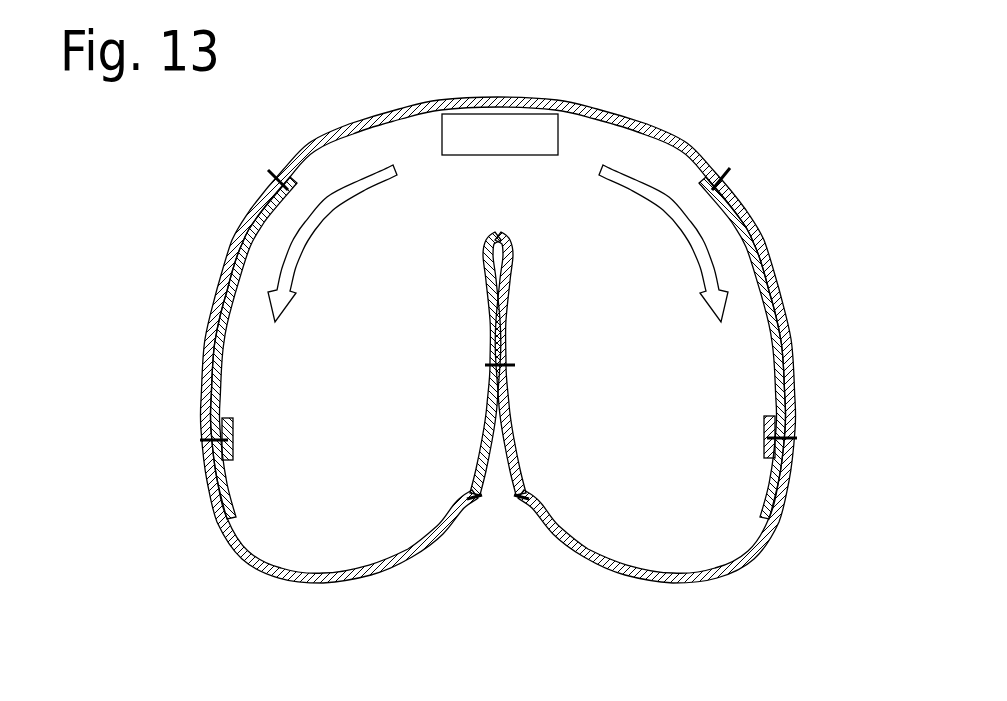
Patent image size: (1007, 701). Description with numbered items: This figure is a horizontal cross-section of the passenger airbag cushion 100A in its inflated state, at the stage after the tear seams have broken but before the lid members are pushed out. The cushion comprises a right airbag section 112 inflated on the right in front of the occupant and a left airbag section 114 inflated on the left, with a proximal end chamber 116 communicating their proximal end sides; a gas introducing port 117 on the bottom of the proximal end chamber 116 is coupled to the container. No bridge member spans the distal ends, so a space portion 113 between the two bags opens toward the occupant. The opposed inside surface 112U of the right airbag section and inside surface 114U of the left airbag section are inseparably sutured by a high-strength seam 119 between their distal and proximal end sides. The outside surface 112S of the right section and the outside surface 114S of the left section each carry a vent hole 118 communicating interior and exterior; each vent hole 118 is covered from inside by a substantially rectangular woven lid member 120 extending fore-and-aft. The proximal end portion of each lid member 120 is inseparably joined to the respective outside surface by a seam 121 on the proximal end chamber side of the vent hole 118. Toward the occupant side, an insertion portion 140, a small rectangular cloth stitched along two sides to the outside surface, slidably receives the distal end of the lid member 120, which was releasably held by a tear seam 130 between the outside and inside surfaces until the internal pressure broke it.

The passenger airbag cushion 100A is at (706, 100).
The right airbag section 112 is at (838, 482).
The outside surface of the right airbag section 112S is at (791, 370).
The inside surface of the right airbag section 112U is at (516, 452).
The space portion 113 is at (495, 456).
The left airbag section 114 is at (153, 503).
The outside surface of the left airbag section 114S is at (205, 370).
The inside surface of the left airbag section 114U is at (481, 452).
The proximal end chamber 116 is at (411, 137).
The gas introducing port 117 is at (503, 115).
The vent hole 118 is at (221, 288).
The seam 119 is at (513, 366).
The lid member 120 is at (225, 352).
The seam 121 is at (279, 178).
The tear seam 130 is at (202, 440).
The insertion portion 140 is at (233, 447).